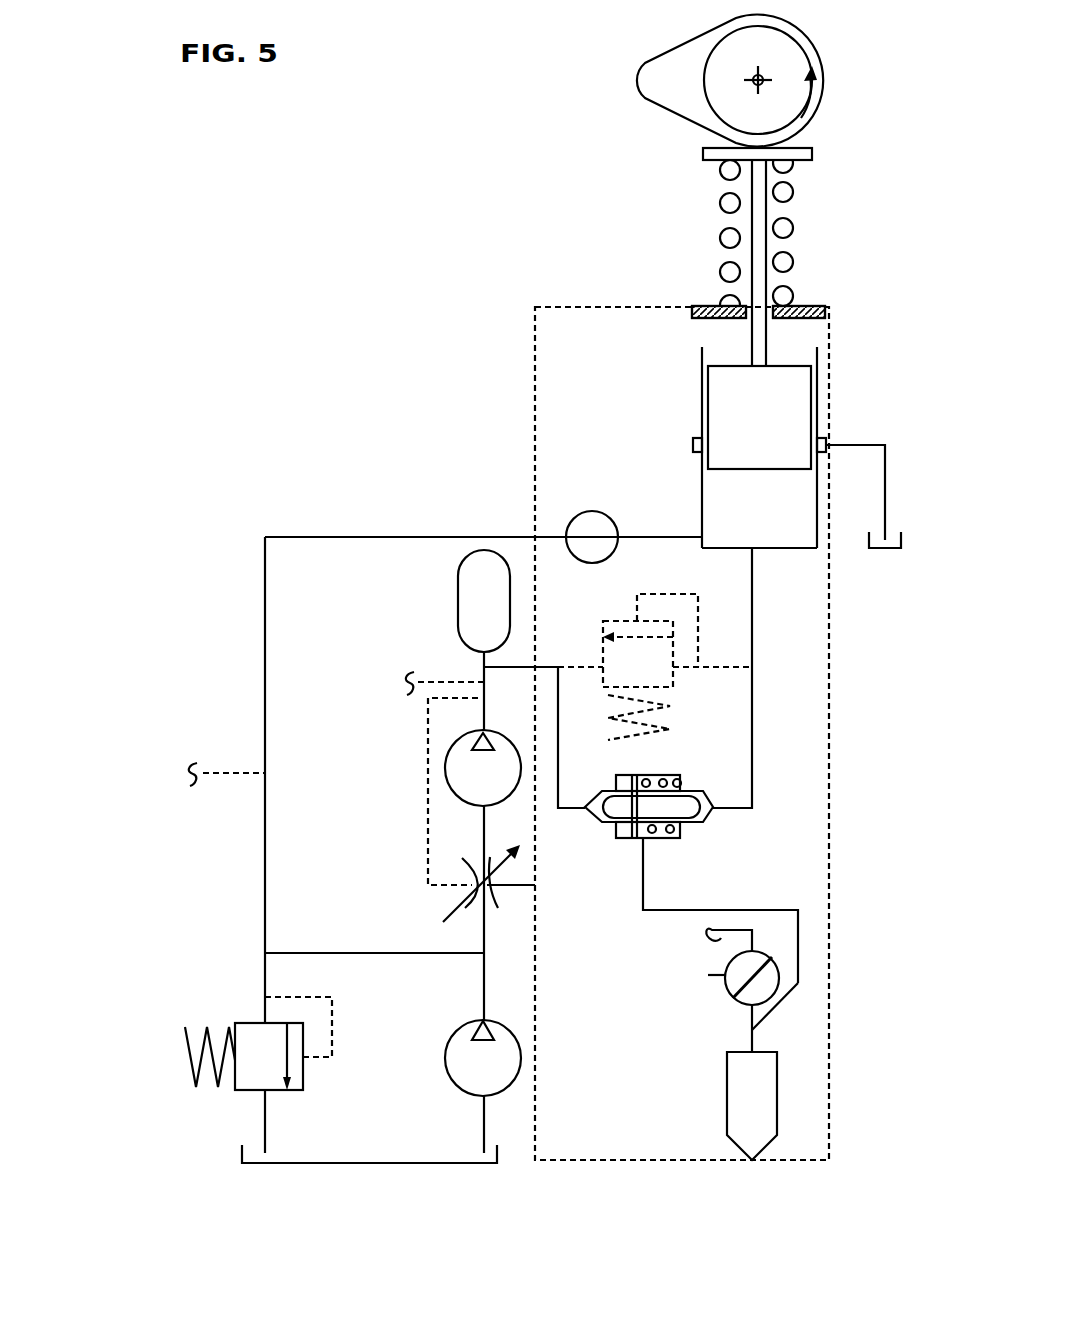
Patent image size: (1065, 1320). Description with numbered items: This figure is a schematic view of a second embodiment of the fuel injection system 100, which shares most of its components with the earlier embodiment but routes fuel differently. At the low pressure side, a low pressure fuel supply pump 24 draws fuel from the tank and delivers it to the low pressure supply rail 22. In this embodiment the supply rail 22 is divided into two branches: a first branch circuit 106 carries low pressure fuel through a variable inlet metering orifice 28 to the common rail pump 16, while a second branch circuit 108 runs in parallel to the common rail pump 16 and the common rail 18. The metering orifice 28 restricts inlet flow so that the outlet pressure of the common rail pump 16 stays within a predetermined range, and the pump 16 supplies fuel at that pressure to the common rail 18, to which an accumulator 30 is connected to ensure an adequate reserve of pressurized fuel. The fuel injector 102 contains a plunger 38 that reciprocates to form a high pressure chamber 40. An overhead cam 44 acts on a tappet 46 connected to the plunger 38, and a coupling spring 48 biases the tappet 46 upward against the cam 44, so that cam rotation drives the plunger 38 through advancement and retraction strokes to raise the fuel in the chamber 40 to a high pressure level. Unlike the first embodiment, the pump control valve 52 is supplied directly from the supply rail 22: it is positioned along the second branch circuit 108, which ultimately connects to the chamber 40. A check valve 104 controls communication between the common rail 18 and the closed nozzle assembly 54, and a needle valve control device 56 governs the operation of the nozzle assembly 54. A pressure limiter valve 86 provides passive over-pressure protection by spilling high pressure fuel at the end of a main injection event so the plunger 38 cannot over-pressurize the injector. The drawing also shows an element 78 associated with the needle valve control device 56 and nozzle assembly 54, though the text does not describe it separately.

The common rail pump 16 is at (445, 783).
The common rail 18 is at (482, 670).
The low pressure supply rail 22 is at (472, 956).
The low pressure fuel supply pump 24 is at (452, 1080).
The variable inlet metering orifice 28 is at (440, 902).
The accumulator 30 is at (472, 550).
The plunger 38 is at (783, 402).
The high pressure chamber 40 is at (783, 536).
The overhead cam 44 is at (673, 45).
The tappet 46 is at (824, 153).
The coupling spring 48 is at (787, 227).
The pump control valve 52 is at (590, 511).
The nozzle assembly 54 is at (777, 1090).
The needle valve control device 56 is at (786, 978).
The solenoid valve 78 is at (708, 975).
The pressure limiter valve 86 is at (621, 621).
The fuel injection system 100 is at (464, 314).
The fuel injector 102 is at (834, 382).
The check valve 104 is at (616, 846).
The first branch circuit 106 is at (483, 920).
The second branch circuit 108 is at (262, 878).